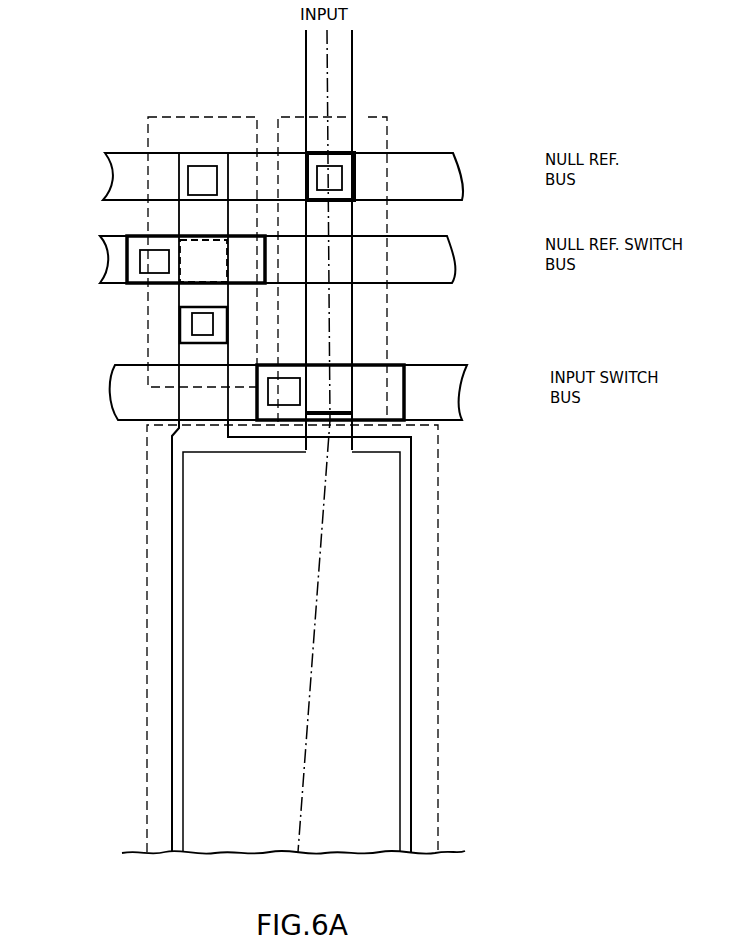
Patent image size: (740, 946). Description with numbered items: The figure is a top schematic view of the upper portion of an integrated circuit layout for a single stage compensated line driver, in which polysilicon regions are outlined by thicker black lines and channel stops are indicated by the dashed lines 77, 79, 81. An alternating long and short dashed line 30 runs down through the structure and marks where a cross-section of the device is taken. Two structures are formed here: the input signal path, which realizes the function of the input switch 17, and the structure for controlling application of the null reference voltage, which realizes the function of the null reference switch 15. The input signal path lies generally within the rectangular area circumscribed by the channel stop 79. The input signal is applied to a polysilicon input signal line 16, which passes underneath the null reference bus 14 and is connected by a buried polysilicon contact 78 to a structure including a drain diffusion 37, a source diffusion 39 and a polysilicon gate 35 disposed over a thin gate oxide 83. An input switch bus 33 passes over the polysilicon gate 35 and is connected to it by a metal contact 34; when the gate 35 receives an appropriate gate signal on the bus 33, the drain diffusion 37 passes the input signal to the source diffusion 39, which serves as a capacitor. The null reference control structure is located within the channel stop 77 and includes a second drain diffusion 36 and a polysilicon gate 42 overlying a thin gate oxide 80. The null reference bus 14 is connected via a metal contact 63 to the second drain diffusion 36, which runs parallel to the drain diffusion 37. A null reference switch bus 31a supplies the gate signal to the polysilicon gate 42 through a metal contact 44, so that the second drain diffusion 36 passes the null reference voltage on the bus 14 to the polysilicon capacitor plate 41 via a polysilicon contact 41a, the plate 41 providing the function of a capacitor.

The null reference bus 14 is at (446, 163).
The null reference switch 15 is at (288, 137).
The polysilicon input signal line 16 is at (352, 87).
The input switch 17 is at (100, 294).
The alternating long and short dashed line 30 is at (331, 51).
The null reference switch bus 31a is at (440, 248).
The input switch bus 33 is at (455, 388).
The metal contact 34 is at (115, 400).
The polysilicon gate 35 is at (406, 399).
The second drain diffusion 36 is at (200, 220).
The drain diffusion 37 is at (338, 215).
The source diffusion 39 is at (400, 592).
The polysilicon capacitor plate 41 is at (411, 658).
The polysilicon contact 41a is at (195, 325).
The polysilicon gate 42 is at (125, 275).
The metal contact 44 is at (153, 267).
The metal contact 63 is at (193, 170).
The channel stop 77 is at (192, 117).
The buried polysilicon contact 78 is at (340, 176).
The channel stop 79 is at (387, 125).
The thin gate oxide 80 is at (180, 268).
The channel stop 81 is at (438, 527).
The thin gate oxide 83 is at (353, 390).